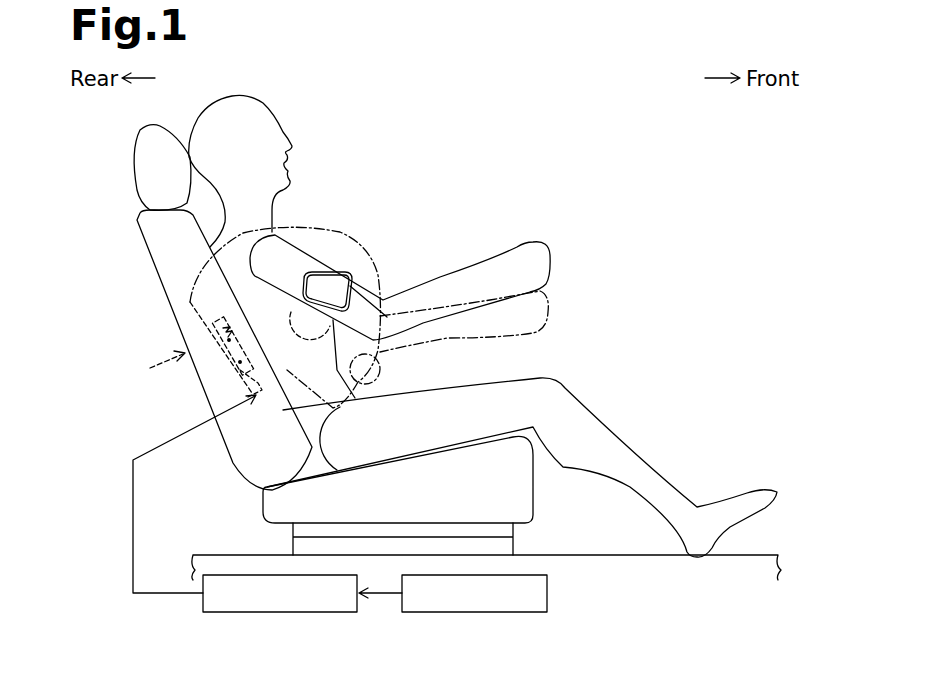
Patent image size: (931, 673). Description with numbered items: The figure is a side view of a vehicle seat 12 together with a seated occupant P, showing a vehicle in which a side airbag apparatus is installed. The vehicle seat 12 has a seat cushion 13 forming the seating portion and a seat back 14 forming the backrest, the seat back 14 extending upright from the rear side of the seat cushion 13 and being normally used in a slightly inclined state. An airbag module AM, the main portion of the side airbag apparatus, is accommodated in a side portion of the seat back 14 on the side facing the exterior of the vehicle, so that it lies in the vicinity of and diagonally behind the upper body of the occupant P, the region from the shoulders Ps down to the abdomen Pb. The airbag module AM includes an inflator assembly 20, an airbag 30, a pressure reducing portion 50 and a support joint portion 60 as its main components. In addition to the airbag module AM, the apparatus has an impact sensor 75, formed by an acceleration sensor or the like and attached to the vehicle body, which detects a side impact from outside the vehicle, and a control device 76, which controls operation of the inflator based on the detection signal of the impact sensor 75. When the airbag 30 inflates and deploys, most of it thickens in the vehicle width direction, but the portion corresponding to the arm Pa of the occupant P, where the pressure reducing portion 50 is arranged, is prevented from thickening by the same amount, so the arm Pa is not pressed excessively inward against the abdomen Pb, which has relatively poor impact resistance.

The occupant P is at (253, 103).
The shoulders Ps is at (252, 232).
The arm Pa is at (303, 314).
The abdomen Pb is at (357, 383).
The vehicle seat 12 is at (176, 307).
The seat back 14 is at (160, 291).
The seat cushion 13 is at (264, 503).
The inflator assembly 20 is at (263, 383).
The airbag module AM is at (150, 367).
The airbag 30 is at (337, 233).
The pressure reducing portion 50 is at (373, 277).
The support joint portion 60 is at (340, 407).
The impact sensor 75 is at (460, 613).
The control device 76 is at (290, 613).